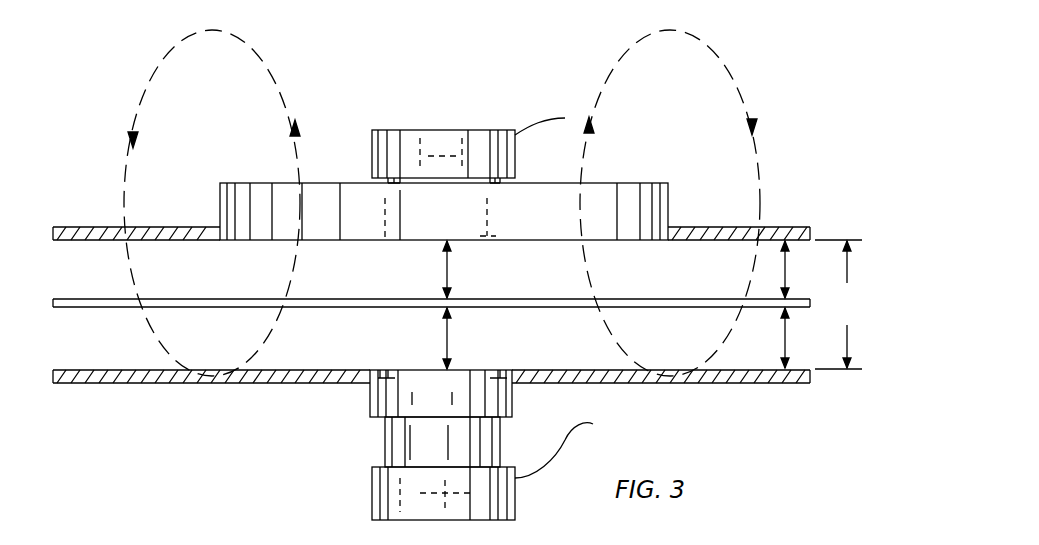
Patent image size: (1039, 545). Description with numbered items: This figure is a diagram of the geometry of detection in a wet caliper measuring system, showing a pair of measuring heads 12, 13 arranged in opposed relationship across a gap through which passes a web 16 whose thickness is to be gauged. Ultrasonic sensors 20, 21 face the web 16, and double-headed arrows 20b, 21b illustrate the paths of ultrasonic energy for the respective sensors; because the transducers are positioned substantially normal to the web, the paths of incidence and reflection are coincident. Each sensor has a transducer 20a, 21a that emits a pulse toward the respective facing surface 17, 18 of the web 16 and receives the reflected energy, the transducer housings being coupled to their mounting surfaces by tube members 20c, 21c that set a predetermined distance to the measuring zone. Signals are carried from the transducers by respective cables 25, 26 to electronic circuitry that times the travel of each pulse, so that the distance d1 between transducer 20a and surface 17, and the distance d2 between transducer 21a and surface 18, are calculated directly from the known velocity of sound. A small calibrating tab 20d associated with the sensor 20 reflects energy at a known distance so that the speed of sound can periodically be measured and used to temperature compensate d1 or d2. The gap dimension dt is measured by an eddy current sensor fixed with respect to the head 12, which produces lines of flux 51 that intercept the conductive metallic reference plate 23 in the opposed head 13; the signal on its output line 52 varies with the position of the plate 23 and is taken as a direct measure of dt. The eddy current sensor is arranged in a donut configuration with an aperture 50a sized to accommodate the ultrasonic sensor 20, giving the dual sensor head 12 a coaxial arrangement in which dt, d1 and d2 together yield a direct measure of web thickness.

The measuring head 12 is at (784, 57).
The measuring head 13 is at (190, 484).
The web 16 is at (70, 310).
The facing surface 17 is at (121, 298).
The facing surface 18 is at (133, 310).
The ultrasonic sensor 20 is at (374, 130).
The transducer 20a is at (447, 132).
The double-headed arrow 20b is at (448, 268).
The tube member 20c is at (385, 200).
The calibrating tab 20d is at (490, 215).
The ultrasonic sensor 21 is at (380, 492).
The transducer 21a is at (372, 478).
The double-headed arrow 21b is at (448, 345).
The tube member 21c is at (385, 440).
The reference plate 23 is at (220, 357).
The cable 25 is at (543, 118).
The cable 26 is at (570, 440).
The aperture 50a is at (230, 183).
The lines of flux 51 is at (127, 158).
The output line 52 is at (700, 147).
The distance d1 is at (787, 270).
The distance d2 is at (787, 337).
The gap dimension dt is at (838, 304).